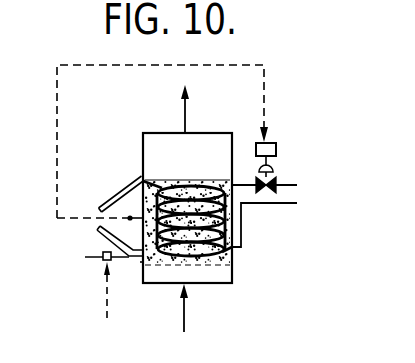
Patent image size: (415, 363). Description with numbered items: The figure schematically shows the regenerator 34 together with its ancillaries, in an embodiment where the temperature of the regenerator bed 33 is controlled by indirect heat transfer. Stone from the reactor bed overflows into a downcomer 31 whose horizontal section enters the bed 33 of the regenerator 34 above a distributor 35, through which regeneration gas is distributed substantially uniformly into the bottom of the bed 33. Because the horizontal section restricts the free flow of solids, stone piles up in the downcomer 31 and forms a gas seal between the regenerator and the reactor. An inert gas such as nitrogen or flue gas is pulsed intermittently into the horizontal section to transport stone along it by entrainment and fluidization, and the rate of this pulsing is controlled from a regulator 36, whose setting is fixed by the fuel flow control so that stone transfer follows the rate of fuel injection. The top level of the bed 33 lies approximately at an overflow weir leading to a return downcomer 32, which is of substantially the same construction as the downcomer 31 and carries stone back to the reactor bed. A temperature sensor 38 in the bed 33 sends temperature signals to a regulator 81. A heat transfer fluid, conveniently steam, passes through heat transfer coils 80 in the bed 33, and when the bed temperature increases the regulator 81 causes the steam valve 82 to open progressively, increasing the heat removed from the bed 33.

The downcomer 31 is at (107, 205).
The return downcomer 32 is at (98, 228).
The regenerator bed 33 is at (232, 256).
The regenerator 34 is at (232, 278).
The distributor 35 is at (211, 268).
The regulator 36 is at (103, 260).
The temperature sensor 38 is at (128, 215).
The heat transfer coils 80 is at (143, 262).
The regulator 81 is at (273, 143).
The steam valve 82 is at (276, 182).